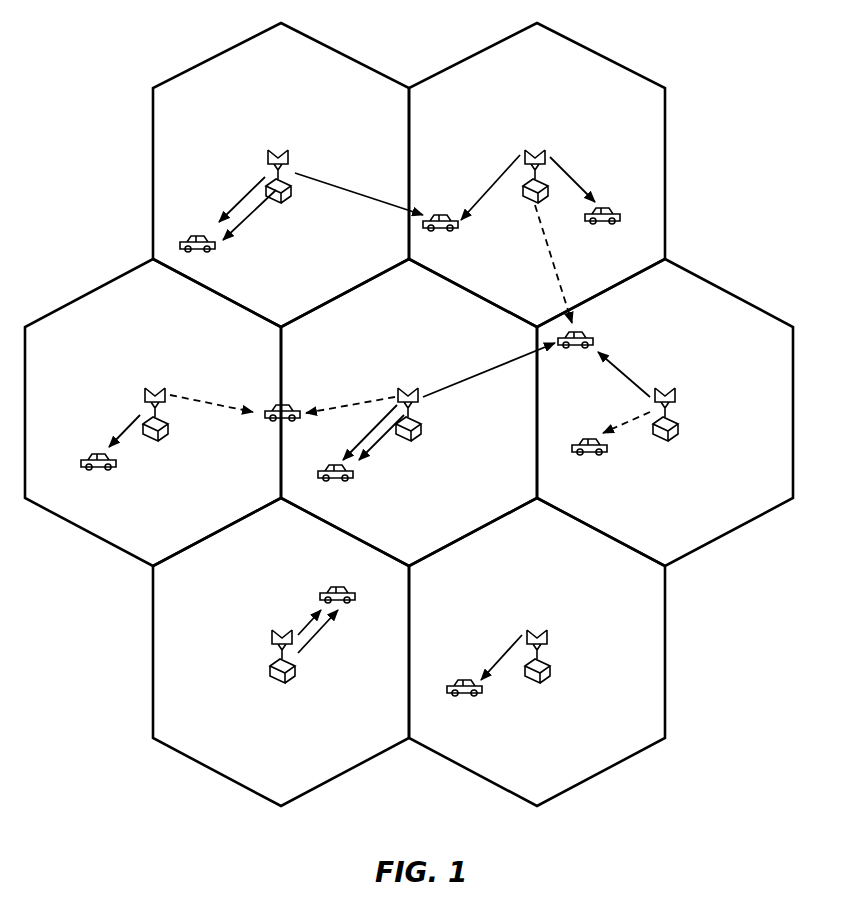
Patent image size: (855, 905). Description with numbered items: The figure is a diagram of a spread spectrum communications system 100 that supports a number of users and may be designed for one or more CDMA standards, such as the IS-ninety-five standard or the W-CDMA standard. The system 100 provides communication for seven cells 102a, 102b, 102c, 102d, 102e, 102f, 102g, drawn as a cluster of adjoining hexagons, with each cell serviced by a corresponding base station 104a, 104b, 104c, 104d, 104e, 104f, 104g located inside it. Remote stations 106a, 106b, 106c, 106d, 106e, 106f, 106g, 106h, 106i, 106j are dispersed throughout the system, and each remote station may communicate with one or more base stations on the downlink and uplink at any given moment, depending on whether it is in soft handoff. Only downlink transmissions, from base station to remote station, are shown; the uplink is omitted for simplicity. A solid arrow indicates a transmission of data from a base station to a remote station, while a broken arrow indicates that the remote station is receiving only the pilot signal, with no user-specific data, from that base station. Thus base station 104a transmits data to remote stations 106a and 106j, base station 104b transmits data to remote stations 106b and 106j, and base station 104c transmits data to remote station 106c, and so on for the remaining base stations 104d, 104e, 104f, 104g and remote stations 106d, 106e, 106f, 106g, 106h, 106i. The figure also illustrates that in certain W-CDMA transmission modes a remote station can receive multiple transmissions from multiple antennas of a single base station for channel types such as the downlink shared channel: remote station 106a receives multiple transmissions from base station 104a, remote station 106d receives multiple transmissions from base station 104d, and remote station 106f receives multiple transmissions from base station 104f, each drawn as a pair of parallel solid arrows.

The spread spectrum communications system 100 is at (797, 116).
The cell 102a is at (216, 56).
The cell 102b is at (610, 41).
The cell 102c is at (91, 293).
The cell 102d is at (409, 412).
The cell 102e is at (740, 277).
The cell 102f is at (153, 657).
The cell 102g is at (665, 657).
The base station 104a is at (279, 166).
The base station 104b is at (529, 166).
The base station 104c is at (151, 405).
The base station 104d is at (406, 405).
The base station 104e is at (672, 405).
The base station 104f is at (280, 646).
The base station 104g is at (532, 646).
The remote station 106a is at (200, 236).
The remote station 106b is at (618, 198).
The remote station 106c is at (100, 454).
The remote station 106d is at (334, 465).
The remote station 106e is at (580, 332).
The remote station 106f is at (336, 587).
The remote station 106g is at (462, 680).
The remote station 106h is at (298, 395).
The remote station 106i is at (590, 439).
The remote station 106j is at (442, 215).